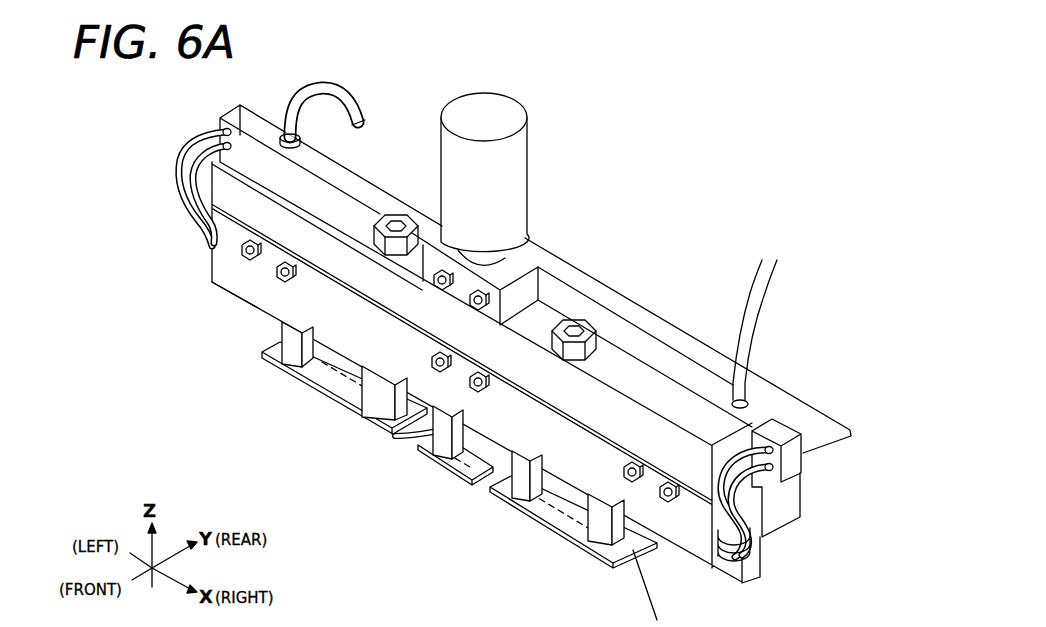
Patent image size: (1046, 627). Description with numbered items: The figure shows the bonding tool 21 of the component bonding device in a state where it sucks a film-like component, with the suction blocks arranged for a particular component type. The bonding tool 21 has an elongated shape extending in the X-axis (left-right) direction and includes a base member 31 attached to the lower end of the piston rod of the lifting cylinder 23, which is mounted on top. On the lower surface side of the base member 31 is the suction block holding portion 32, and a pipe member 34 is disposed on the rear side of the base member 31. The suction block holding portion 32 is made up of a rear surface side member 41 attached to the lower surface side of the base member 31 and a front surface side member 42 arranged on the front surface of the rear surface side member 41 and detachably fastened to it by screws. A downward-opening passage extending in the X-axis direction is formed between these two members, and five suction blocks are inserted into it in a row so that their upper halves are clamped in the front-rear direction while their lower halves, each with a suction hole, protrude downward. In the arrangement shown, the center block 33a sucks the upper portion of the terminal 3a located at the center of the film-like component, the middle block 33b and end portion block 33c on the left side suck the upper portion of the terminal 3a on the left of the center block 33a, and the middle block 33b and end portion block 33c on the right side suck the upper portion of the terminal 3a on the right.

The bonding tool 21 is at (602, 227).
The lifting cylinder 23 is at (522, 168).
The base member 31 is at (683, 392).
The suction block holding portion 32 is at (219, 287).
The center block 33a is at (453, 445).
The middle block 33b is at (537, 497).
The end portion block 33c is at (600, 530).
The terminal 3a is at (560, 537).
The pipe member 34 is at (630, 338).
The rear surface side member 41 is at (782, 520).
The front surface side member 42 is at (270, 300).